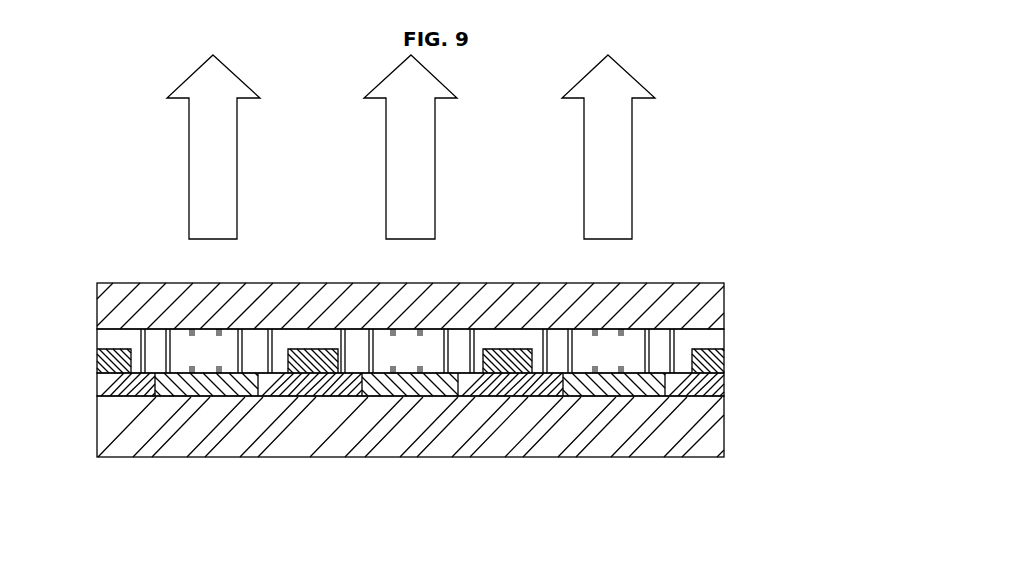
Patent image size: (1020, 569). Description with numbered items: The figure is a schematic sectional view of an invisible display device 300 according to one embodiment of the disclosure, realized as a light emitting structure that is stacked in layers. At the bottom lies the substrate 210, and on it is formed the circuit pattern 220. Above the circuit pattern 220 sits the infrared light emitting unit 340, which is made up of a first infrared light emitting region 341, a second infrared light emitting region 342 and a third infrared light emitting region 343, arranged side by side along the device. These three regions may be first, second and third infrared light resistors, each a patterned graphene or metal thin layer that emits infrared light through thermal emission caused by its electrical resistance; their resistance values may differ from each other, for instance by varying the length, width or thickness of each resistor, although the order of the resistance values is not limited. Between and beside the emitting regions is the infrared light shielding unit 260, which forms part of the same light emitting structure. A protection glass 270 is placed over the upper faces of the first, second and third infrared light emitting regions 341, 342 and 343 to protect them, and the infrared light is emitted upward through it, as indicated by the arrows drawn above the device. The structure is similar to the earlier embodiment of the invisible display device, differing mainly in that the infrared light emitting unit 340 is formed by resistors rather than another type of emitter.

The invisible display device 300 is at (728, 213).
The substrate 210 is at (695, 437).
The circuit pattern 220 is at (722, 390).
The infrared light shielding unit 260 is at (118, 364).
The protection glass 270 is at (717, 306).
The infrared light emitting unit 340 is at (706, 337).
The first infrared light emitting region 341 is at (166, 329).
The second infrared light emitting region 342 is at (378, 329).
The third infrared light emitting region 343 is at (638, 330).